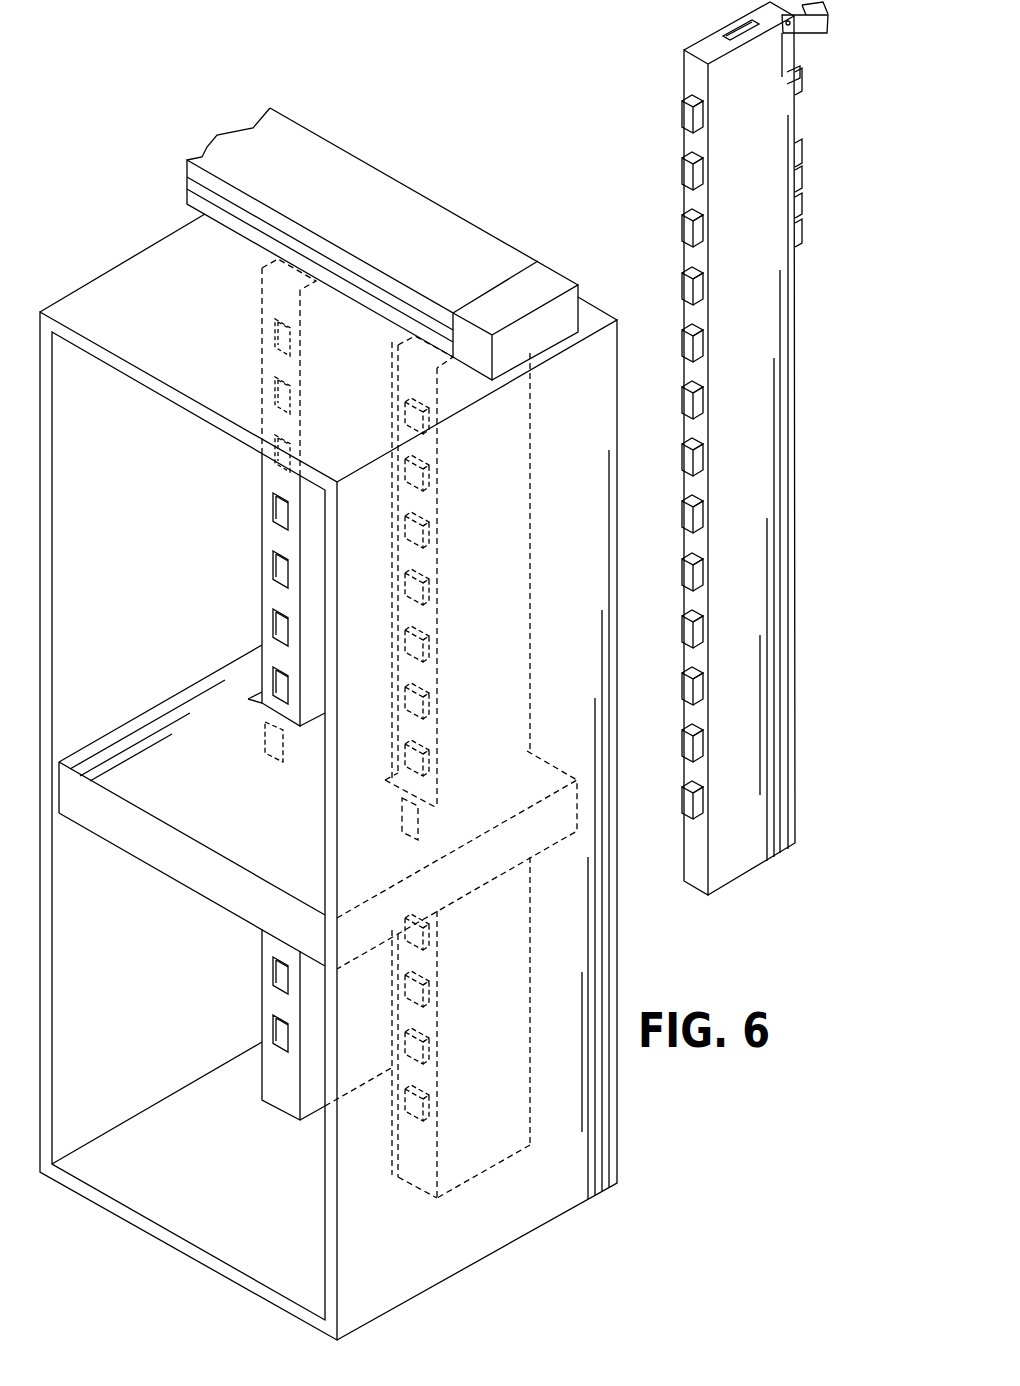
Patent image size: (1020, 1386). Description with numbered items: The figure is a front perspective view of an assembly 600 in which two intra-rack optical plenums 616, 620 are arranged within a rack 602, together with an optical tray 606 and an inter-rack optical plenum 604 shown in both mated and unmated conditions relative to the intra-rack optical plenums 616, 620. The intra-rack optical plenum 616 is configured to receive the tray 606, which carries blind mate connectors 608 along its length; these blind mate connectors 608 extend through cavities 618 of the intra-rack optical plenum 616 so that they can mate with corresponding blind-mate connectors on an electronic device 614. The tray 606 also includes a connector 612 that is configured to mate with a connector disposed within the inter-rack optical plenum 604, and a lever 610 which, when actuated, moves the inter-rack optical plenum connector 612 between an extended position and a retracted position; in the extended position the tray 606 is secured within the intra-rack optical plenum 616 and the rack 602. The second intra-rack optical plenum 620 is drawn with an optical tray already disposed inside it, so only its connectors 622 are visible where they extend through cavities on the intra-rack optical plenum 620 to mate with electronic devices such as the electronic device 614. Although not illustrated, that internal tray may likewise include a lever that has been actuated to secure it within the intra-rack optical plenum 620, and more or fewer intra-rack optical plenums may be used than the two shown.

The storage system 600 is at (143, 132).
The rack 602 is at (127, 260).
The inter-rack optical plenum 604 is at (427, 194).
The optical tray 606 is at (796, 457).
The blind mate connectors 608 is at (682, 117).
The lever 610 is at (830, 23).
The connector 612 is at (733, 28).
The electronic device 614 is at (185, 888).
The intra-rack optical plenum 616 is at (262, 528).
The cavities 618 is at (273, 618).
The intra-rack optical plenum 620 is at (530, 425).
The connectors 622 is at (420, 508).